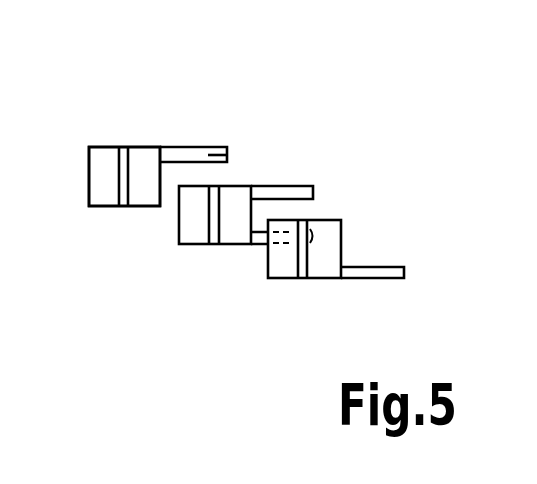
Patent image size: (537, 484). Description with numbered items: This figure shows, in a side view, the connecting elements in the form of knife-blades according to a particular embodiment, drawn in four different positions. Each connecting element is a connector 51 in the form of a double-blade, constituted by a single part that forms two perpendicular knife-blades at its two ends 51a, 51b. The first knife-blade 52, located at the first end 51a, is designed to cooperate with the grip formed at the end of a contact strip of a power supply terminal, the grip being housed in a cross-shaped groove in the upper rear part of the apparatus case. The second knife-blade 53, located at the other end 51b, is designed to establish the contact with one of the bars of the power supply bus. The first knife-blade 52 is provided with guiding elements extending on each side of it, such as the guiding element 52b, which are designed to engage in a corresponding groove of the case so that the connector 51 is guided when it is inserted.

The connector 51 is at (268, 190).
The end of connector 51a is at (107, 133).
The end of connector 51b is at (222, 132).
The first knife-blade 52 is at (144, 190).
The guiding element 52b is at (122, 177).
The second knife-blade 53 is at (227, 153).